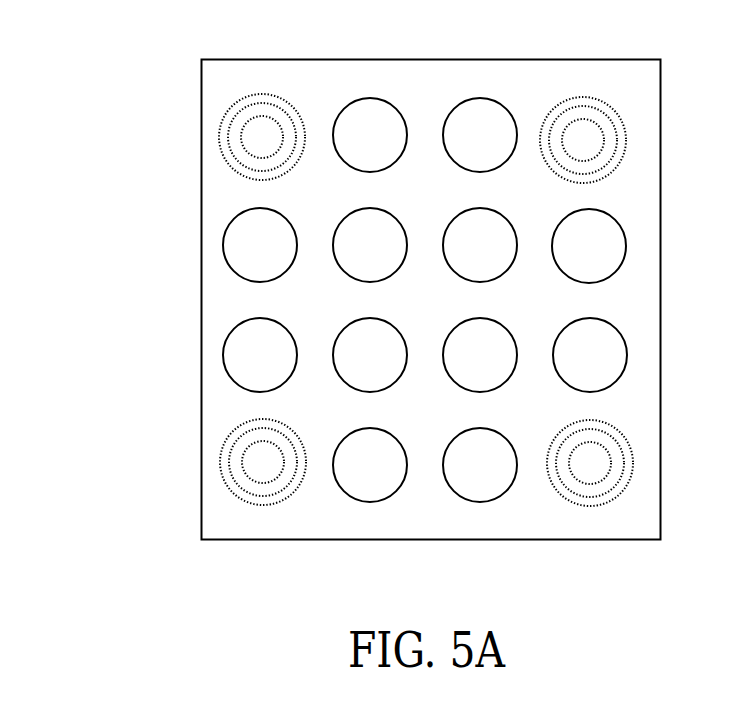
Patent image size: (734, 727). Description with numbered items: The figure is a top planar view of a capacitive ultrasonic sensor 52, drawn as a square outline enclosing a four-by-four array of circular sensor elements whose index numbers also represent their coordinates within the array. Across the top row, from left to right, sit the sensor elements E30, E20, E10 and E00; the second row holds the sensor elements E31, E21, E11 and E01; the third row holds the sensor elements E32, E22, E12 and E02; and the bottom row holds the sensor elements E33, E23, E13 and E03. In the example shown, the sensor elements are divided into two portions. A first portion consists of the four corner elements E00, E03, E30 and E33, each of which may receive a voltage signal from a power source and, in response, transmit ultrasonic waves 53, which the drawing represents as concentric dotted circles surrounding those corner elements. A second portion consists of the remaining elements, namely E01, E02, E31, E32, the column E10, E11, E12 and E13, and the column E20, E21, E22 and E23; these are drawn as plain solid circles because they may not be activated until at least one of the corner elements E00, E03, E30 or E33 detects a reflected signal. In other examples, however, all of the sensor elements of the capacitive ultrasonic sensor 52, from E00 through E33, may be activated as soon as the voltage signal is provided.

The capacitive ultrasonic sensor 52 is at (201, 112).
The ultrasonic waves 53 is at (640, 481).
The sensor element E00 is at (583, 140).
The sensor element E10 is at (480, 135).
The sensor element E20 is at (370, 135).
The sensor element E30 is at (262, 137).
The sensor element E01 is at (589, 246).
The sensor element E11 is at (480, 245).
The sensor element E21 is at (370, 245).
The sensor element E31 is at (260, 245).
The sensor element E02 is at (590, 355).
The sensor element E12 is at (480, 355).
The sensor element E22 is at (370, 355).
The sensor element E32 is at (260, 355).
The sensor element E03 is at (590, 463).
The sensor element E13 is at (480, 465).
The sensor element E23 is at (370, 465).
The sensor element E33 is at (263, 462).